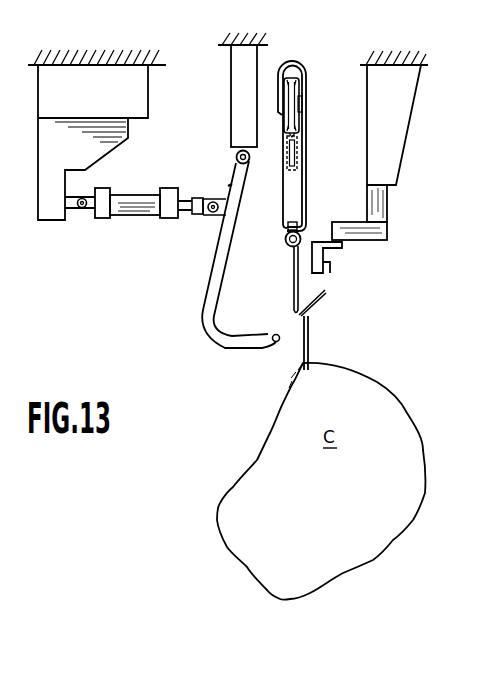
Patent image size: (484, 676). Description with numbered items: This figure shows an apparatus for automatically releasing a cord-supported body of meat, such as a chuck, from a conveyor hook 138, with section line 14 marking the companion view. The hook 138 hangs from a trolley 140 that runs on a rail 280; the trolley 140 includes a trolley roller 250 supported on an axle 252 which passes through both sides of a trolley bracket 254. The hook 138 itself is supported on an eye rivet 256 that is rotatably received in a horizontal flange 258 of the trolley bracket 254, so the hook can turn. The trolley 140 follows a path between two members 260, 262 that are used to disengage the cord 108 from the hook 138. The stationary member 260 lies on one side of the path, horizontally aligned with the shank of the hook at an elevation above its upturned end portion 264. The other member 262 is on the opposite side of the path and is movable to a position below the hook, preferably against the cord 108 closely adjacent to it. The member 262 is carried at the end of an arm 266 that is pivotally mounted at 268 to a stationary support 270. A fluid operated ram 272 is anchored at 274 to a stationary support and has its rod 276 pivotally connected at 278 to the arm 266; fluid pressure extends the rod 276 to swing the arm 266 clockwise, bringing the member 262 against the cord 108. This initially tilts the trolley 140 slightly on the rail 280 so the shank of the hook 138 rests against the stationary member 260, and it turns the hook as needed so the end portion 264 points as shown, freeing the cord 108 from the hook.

The section line of FIG. 14 is at (356, 72).
The cord 108 is at (309, 336).
The conveyor hook 138 is at (292, 294).
The trolley 140 is at (294, 63).
The trolley roller 250 is at (298, 93).
The axle 252 is at (301, 108).
The trolley bracket 254 is at (307, 135).
The eye rivet 256 is at (289, 249).
The horizontal flange 258 is at (288, 229).
The stationary member 260 is at (322, 268).
The movable member 262 is at (274, 335).
The upturned end portion 264 is at (322, 301).
The arm 266 is at (205, 310).
The pivot 268 is at (239, 153).
The stationary support 270 is at (233, 88).
The fluid operated ram 272 is at (144, 202).
The anchor 274 is at (80, 209).
The rod 276 is at (189, 214).
The pivotal connection 278 is at (213, 201).
The rail 280 is at (297, 171).